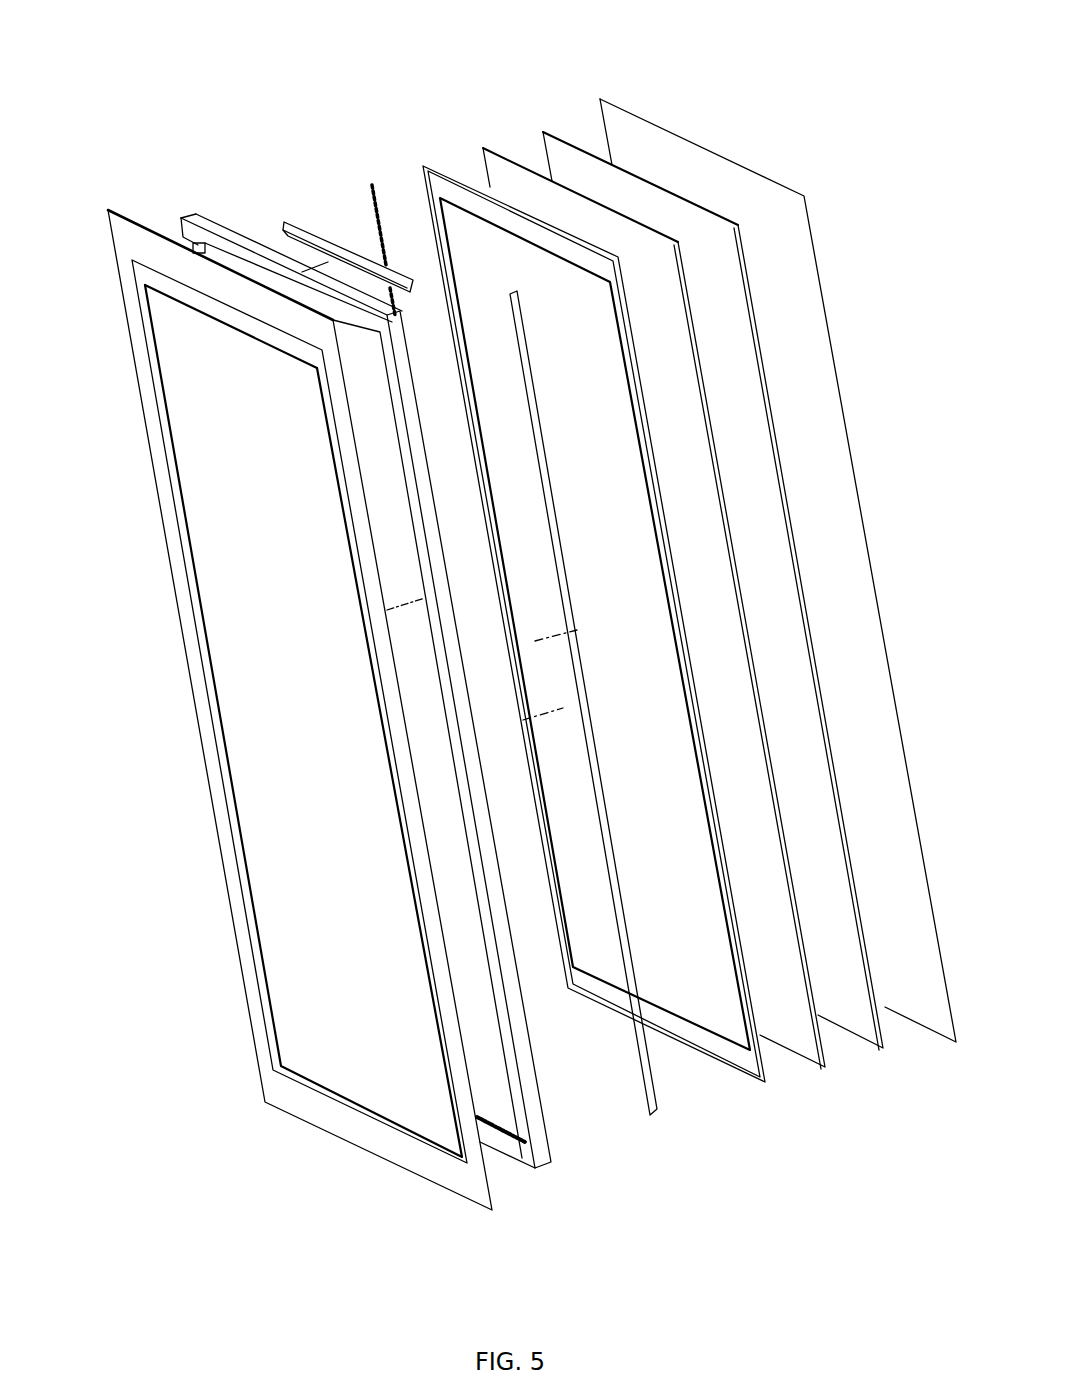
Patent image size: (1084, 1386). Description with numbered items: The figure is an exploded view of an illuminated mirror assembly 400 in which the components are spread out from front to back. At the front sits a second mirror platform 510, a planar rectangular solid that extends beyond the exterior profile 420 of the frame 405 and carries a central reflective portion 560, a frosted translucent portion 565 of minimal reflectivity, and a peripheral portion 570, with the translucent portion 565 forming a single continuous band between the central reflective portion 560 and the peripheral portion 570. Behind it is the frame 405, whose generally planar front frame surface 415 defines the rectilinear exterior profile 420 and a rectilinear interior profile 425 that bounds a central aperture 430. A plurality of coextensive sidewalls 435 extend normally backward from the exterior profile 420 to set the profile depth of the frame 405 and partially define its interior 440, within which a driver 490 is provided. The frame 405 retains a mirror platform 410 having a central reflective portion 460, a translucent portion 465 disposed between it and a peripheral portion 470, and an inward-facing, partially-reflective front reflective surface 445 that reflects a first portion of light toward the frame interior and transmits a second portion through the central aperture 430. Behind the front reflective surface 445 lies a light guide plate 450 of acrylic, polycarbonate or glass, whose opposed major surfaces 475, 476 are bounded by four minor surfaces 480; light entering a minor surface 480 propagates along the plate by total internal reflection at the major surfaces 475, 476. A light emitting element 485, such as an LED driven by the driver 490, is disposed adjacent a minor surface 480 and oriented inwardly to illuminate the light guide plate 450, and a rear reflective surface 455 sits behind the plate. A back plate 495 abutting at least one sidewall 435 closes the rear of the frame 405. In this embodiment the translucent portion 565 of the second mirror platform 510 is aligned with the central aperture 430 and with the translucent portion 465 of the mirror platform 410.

The mirror assembly 400 is at (80, 70).
The frame 405 is at (186, 218).
The mirror platform 410 is at (420, 166).
The front frame surface 415 is at (180, 217).
The exterior profile 420 is at (513, 1027).
The interior profile 425 is at (515, 1078).
The central aperture 430 is at (508, 1112).
The sidewalls 435 is at (230, 237).
The interior 440 is at (382, 371).
The front reflective surface 445 is at (457, 163).
The light guide plate 450 is at (635, 240).
The rear reflective surface 455 is at (702, 257).
The central reflective portion 460 is at (510, 392).
The translucent portion 465 is at (533, 233).
The peripheral portion 470 is at (575, 242).
The major surface 475 is at (765, 838).
The major surface 476 is at (790, 743).
The minor surfaces 480 is at (543, 173).
The light emitting element 485 is at (373, 185).
The driver 490 is at (305, 228).
The back plate 495 is at (758, 187).
The second mirror platform 510 is at (117, 242).
The central reflective portion 560 is at (217, 473).
The translucent portion 565 is at (230, 313).
The peripheral portion 570 is at (270, 312).